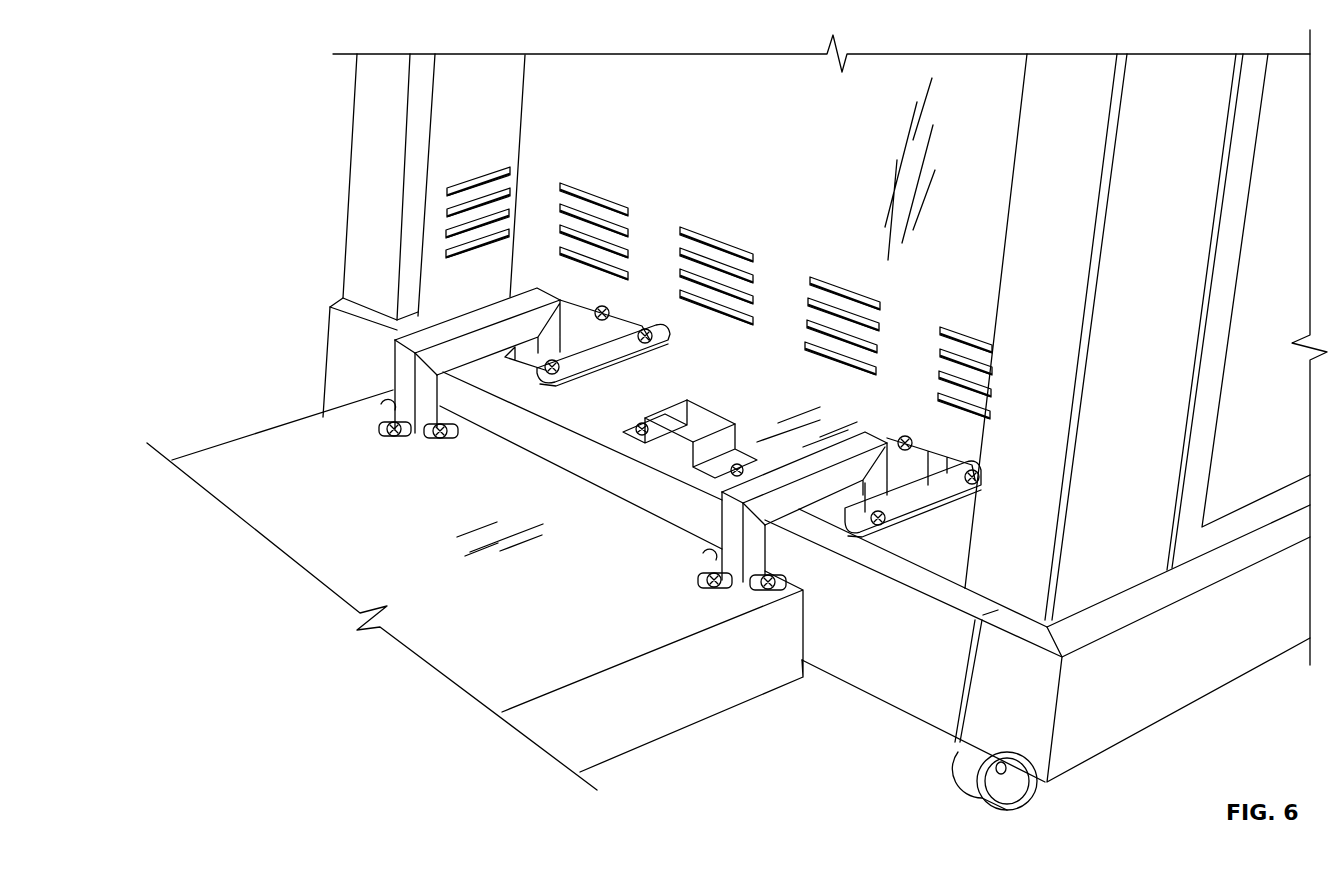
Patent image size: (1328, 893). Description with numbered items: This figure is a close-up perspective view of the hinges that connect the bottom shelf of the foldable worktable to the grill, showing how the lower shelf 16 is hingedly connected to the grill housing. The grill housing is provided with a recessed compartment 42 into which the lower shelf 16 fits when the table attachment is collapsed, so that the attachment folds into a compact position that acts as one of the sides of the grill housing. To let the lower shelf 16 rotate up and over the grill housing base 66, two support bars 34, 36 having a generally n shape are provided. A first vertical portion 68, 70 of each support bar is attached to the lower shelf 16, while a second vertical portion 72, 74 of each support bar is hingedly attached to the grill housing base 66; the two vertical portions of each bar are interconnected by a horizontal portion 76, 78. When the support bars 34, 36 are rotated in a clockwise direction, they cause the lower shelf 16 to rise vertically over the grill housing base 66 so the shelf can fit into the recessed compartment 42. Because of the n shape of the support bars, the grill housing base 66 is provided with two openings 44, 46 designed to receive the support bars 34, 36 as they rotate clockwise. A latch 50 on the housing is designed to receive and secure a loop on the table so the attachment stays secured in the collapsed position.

The lower shelf 16 is at (672, 715).
The support bar 34 is at (808, 518).
The support bar 36 is at (340, 356).
The recessed compartment 42 is at (983, 87).
The opening 44 is at (940, 468).
The opening 46 is at (620, 328).
The latch 50 is at (697, 418).
The grill housing base 66 is at (924, 690).
The first vertical portion 68 is at (733, 528).
The first vertical portion 70 is at (428, 398).
The second vertical portion 72 is at (882, 483).
The second vertical portion 74 is at (555, 343).
The horizontal portion 76 is at (870, 440).
The horizontal portion 78 is at (512, 305).